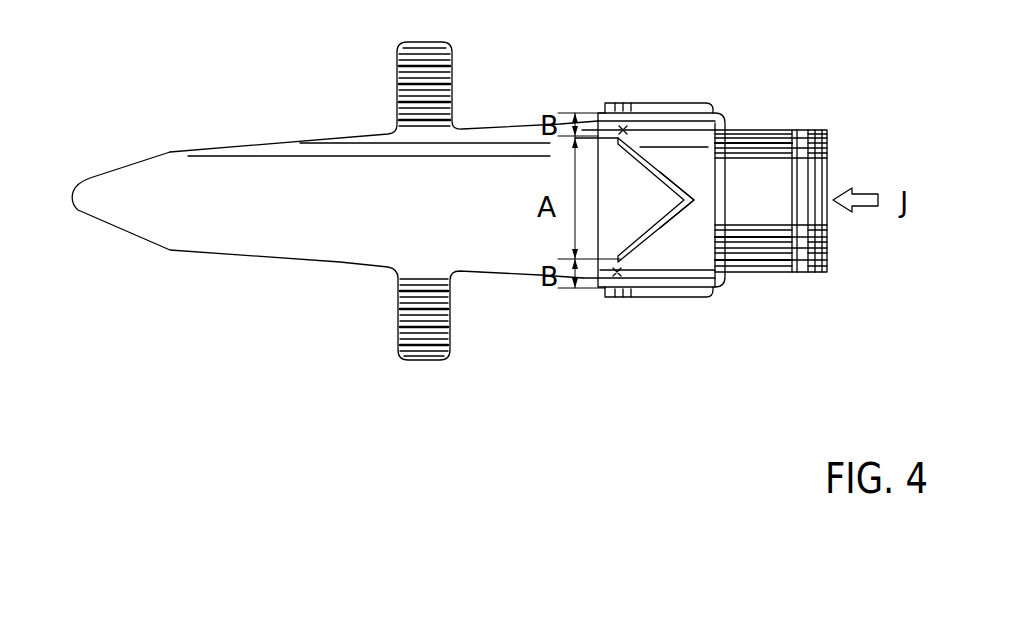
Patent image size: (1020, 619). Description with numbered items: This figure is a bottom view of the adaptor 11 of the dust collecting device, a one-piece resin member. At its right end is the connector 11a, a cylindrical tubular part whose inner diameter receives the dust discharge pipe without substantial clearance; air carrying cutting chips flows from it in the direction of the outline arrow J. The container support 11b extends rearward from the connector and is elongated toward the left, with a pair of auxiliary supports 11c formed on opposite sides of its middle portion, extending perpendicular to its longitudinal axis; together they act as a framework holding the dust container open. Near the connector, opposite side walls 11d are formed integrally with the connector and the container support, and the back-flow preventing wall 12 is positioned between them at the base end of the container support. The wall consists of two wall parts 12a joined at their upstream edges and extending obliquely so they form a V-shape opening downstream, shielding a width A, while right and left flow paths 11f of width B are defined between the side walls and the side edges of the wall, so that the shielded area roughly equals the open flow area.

The adaptor 11 is at (460, 209).
The connector 11a is at (762, 223).
The container support 11b is at (305, 205).
The auxiliary supports 11c is at (427, 80).
The side walls 11d is at (680, 105).
The flow paths 11f is at (639, 126).
The back-flow preventing wall 12 is at (694, 190).
The wall parts 12a is at (675, 168).